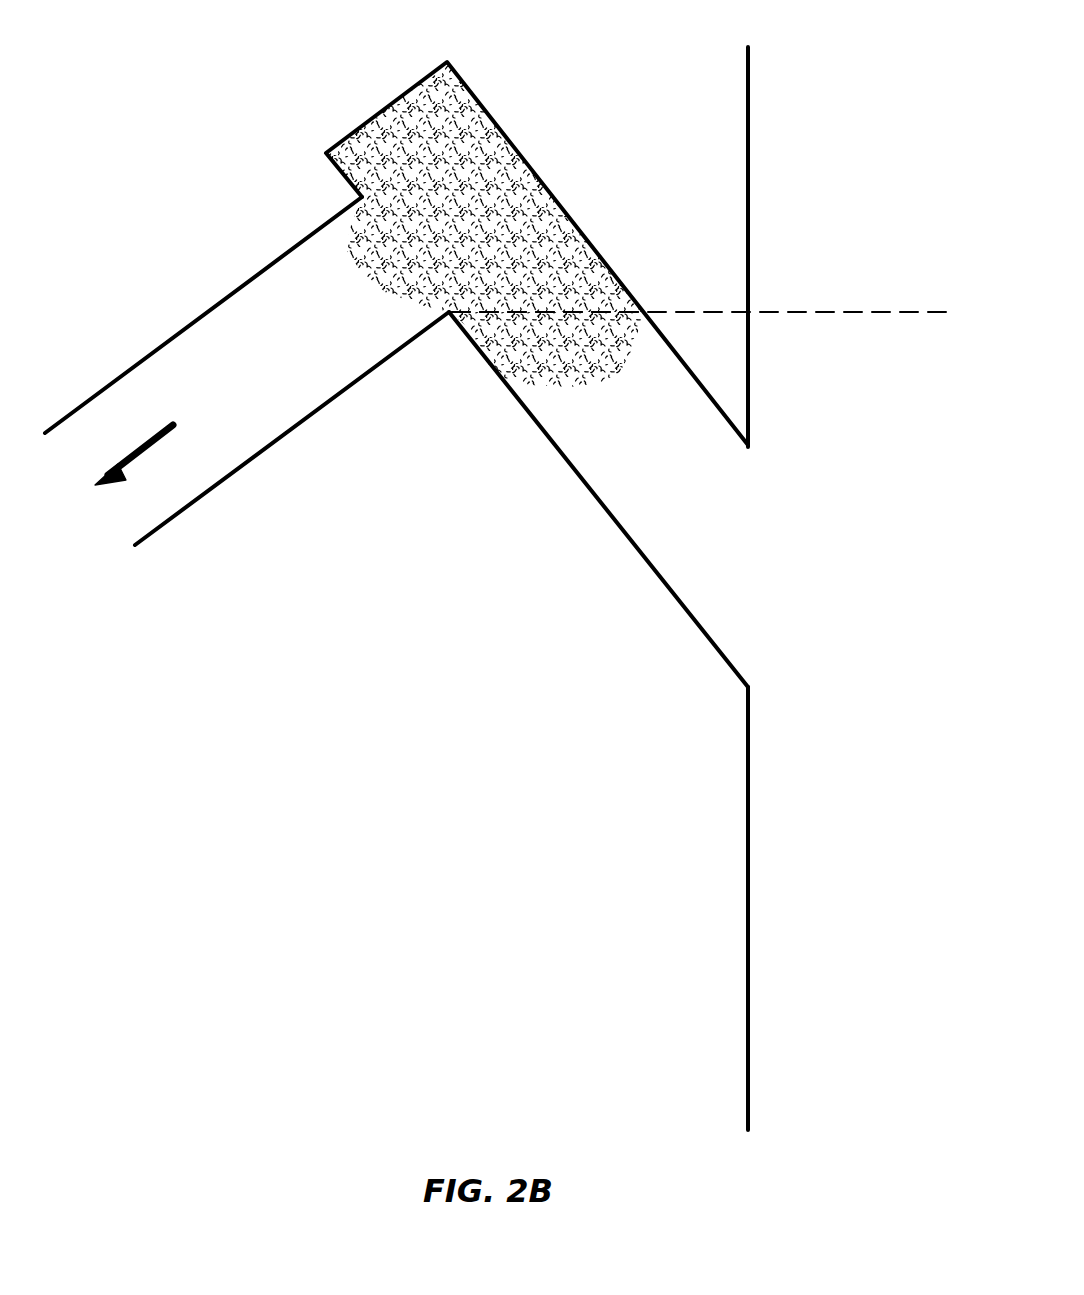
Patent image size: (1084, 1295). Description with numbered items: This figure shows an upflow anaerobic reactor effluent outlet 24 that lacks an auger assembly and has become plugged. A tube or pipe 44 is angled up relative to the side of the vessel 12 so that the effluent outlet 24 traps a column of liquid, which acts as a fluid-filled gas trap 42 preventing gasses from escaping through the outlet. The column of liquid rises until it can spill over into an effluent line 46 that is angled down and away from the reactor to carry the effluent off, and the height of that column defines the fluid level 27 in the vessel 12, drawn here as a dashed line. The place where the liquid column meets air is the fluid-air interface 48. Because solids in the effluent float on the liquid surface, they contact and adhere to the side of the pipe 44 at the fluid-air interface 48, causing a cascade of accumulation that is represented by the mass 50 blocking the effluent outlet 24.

The vessel 12 is at (745, 92).
The effluent outlet 24 is at (206, 107).
The fluid level 27 is at (825, 312).
The fluid-filled gas trap 42 is at (544, 534).
The pipe 44 is at (668, 360).
The effluent line 46 is at (230, 293).
The fluid-air interface 48 is at (497, 315).
The mass 50 is at (487, 195).